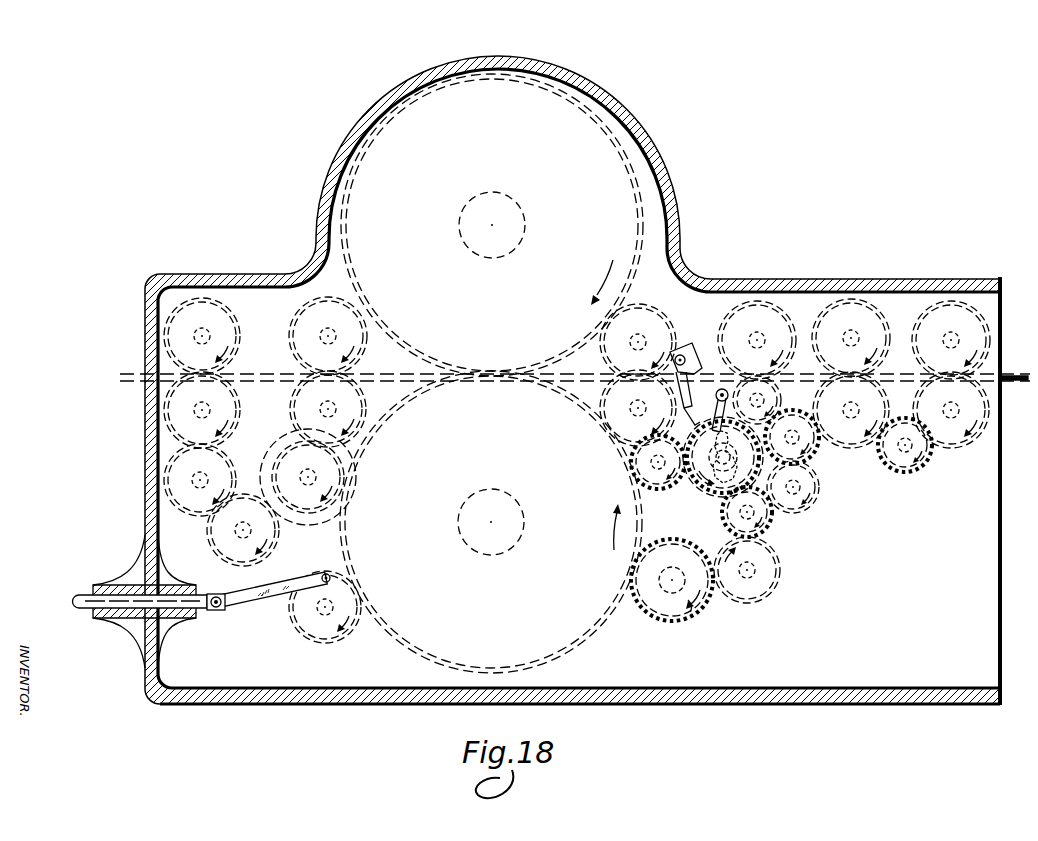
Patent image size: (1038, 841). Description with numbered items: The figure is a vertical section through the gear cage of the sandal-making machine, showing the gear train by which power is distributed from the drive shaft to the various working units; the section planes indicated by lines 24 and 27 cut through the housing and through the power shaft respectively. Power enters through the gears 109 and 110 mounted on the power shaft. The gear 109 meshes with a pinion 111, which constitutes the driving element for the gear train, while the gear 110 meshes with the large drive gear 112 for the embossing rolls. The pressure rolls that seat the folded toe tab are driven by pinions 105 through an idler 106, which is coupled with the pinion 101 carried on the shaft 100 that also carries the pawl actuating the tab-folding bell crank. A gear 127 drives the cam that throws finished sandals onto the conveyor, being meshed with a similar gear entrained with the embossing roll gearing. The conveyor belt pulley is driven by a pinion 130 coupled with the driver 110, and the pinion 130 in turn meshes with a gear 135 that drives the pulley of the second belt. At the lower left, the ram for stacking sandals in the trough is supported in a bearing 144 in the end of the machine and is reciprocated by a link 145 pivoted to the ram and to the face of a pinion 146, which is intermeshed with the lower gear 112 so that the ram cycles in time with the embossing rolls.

The section line 24 is at (462, 35).
The section line 27 is at (700, 535).
The shaft 100 is at (724, 457).
The pinion 101 is at (714, 486).
The pinions 105 is at (666, 342).
The idler 106 is at (666, 482).
The gear 109 is at (689, 612).
The gear 110 is at (652, 607).
The pinion 111 is at (750, 597).
The drive gear 112 is at (574, 640).
The gear 127 is at (366, 349).
The pinion 130 is at (232, 420).
The gear 135 is at (240, 334).
The bearing 144 is at (97, 588).
The link 145 is at (263, 604).
The pinion 146 is at (344, 637).